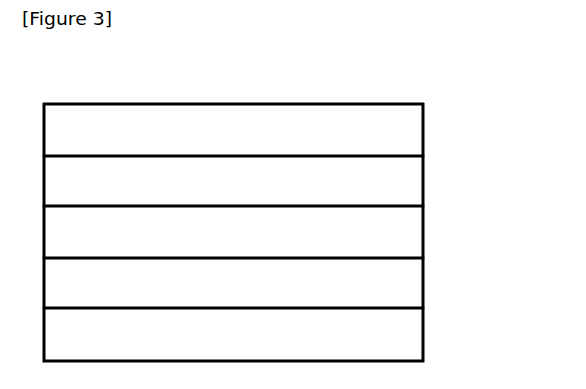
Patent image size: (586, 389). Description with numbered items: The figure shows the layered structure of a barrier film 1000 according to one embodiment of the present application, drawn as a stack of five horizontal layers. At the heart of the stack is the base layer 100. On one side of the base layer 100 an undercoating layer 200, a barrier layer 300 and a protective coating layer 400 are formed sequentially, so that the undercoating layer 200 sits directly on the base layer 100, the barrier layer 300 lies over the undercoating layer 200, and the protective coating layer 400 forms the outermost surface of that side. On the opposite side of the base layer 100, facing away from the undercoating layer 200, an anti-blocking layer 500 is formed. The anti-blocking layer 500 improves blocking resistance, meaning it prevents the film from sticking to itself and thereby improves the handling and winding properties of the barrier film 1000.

The barrier film 1000 is at (115, 94).
The base layer 100 is at (423, 283).
The undercoating layer 200 is at (423, 232).
The barrier layer 300 is at (423, 182).
The protective coating layer 400 is at (423, 130).
The anti-blocking layer 500 is at (423, 335).